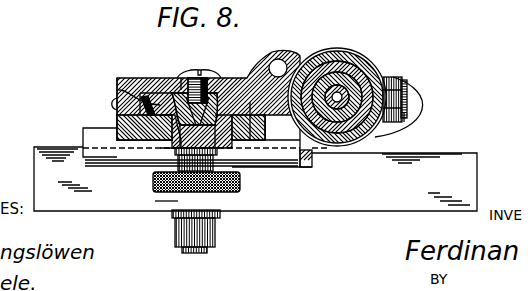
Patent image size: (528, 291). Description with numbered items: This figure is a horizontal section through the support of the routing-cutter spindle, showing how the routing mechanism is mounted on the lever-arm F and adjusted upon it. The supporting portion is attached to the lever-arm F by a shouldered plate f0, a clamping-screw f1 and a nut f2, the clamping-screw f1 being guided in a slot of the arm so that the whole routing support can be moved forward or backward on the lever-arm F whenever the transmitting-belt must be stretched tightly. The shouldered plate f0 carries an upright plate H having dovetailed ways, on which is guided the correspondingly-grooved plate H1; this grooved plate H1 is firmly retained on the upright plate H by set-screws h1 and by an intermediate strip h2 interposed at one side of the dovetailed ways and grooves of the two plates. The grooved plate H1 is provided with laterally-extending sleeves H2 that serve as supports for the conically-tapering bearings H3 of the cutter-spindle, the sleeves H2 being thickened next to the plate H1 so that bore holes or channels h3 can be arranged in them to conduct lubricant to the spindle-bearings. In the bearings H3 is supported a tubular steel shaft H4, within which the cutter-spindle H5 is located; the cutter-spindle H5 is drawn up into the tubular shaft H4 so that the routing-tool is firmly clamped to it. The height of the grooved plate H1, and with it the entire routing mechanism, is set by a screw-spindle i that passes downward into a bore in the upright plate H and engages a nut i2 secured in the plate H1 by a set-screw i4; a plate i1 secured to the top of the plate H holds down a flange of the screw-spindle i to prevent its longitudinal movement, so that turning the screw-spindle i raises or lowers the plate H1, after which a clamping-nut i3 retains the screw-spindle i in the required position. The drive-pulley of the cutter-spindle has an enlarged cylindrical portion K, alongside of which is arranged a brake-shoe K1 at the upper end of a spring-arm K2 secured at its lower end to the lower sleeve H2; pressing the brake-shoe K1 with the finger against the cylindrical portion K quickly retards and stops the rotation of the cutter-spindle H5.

The lever-arm F is at (50, 176).
The shouldered plate f0 is at (313, 157).
The clamping-screw f1 is at (196, 252).
The nut f2 is at (214, 232).
The upright plate H is at (143, 128).
The grooved plate H1 is at (153, 86).
The laterally-extending sleeves H2 is at (423, 102).
The conically-tapering bearings H3 is at (325, 63).
The tubular steel shaft H4 is at (353, 67).
The cutter-spindle H5 is at (370, 73).
The set-screws h1 is at (116, 104).
The intermediate strip h2 is at (117, 86).
The bore holes or channels h3 is at (276, 66).
The screw-spindle i is at (259, 100).
The plate i1 is at (167, 131).
The nut i2 is at (206, 76).
The clamping-nut i3 is at (208, 192).
The set-screw i4 is at (181, 77).
The enlarged cylindrical portion K is at (382, 71).
The brake-shoe K1 is at (407, 84).
The spring-arm K2 is at (405, 111).